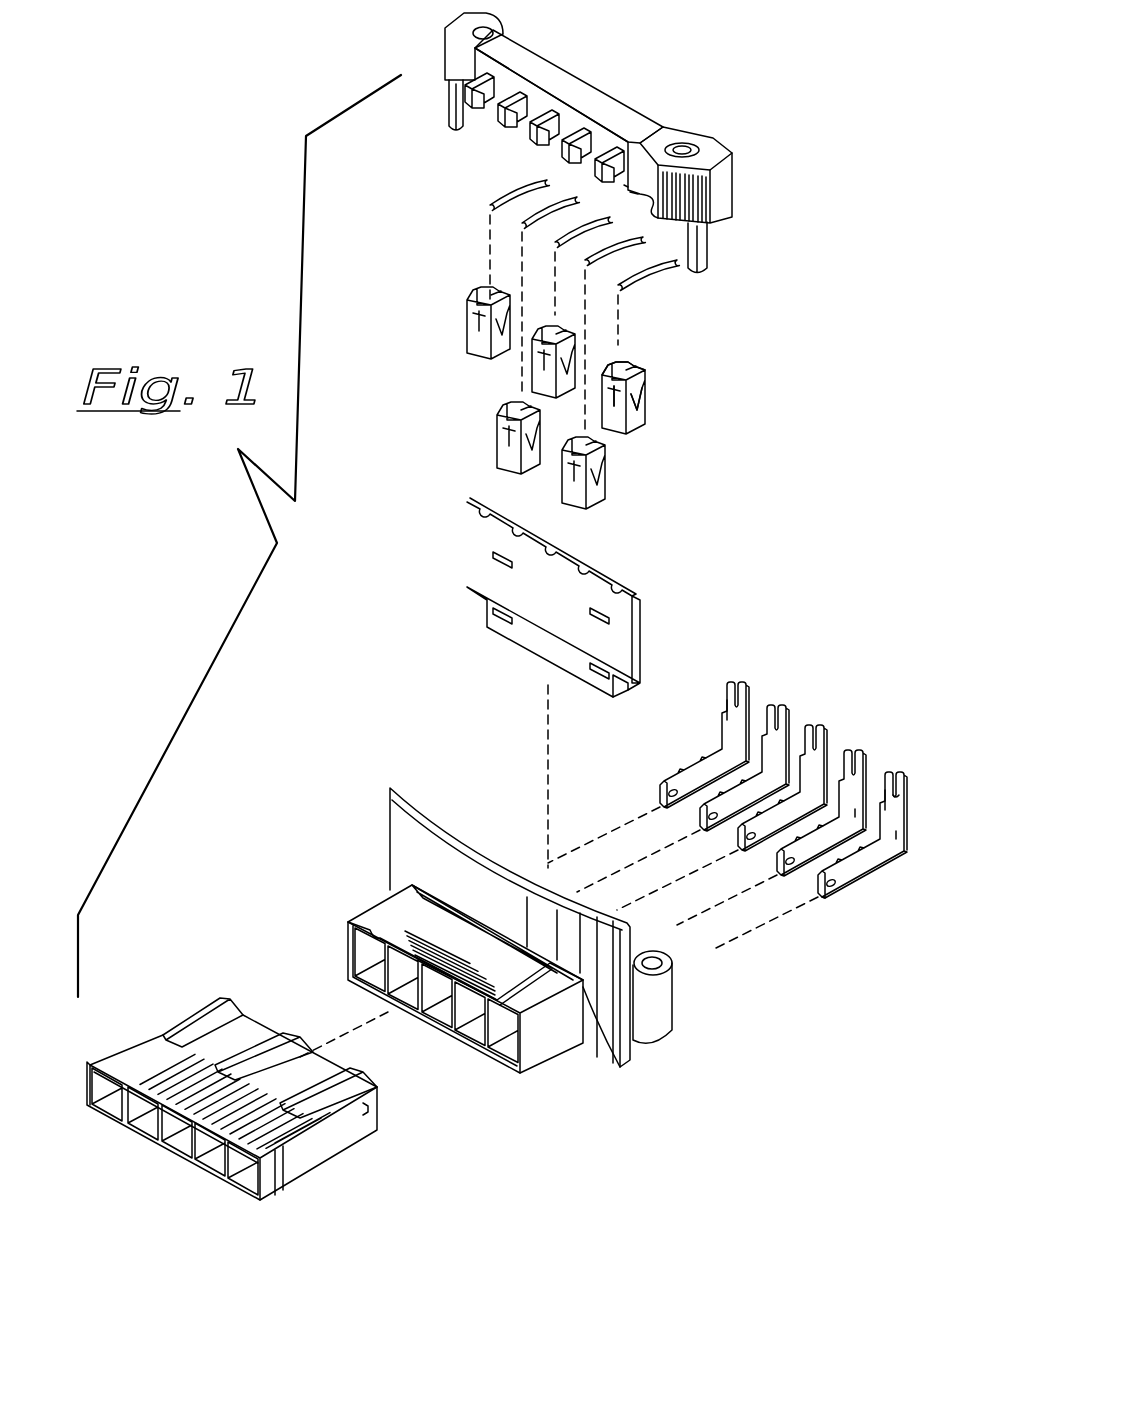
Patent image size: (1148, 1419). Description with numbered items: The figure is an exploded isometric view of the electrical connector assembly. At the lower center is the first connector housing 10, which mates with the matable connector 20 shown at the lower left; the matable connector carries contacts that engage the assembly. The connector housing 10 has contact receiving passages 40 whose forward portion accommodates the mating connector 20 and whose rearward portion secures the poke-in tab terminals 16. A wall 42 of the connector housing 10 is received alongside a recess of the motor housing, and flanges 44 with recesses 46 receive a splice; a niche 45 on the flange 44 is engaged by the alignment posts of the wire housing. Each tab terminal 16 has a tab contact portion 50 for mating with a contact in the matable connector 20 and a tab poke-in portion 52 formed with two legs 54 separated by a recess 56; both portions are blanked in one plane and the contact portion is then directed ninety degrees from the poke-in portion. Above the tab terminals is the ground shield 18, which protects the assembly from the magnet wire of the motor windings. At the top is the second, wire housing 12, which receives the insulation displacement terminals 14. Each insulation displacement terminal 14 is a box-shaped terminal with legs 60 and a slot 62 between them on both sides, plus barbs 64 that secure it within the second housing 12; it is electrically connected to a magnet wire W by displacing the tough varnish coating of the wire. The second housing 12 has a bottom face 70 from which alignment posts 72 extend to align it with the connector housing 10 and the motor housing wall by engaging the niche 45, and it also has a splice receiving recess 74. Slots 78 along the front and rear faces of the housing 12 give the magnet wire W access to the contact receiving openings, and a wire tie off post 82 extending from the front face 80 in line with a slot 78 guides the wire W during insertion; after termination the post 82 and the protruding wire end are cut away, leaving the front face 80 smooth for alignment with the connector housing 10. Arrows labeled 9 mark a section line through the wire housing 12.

The connector housing 10 is at (515, 959).
The wire housing 12 is at (604, 136).
The insulation displacement terminal 14 is at (562, 398).
The tab terminal 16 is at (803, 789).
The ground shield 18 is at (460, 560).
The matable connector 20 is at (346, 1149).
The contact receiving passages 40 is at (367, 948).
The wall 42 is at (505, 900).
The flanges 44 is at (655, 1030).
The niche 45 is at (660, 1002).
The recesses 46 is at (654, 960).
The tab contact portion 50 is at (847, 883).
The tab poke-in portion 52 is at (733, 718).
The legs 54 is at (853, 753).
The recess 56 is at (897, 783).
The legs 60 is at (603, 377).
The slot 62 is at (614, 392).
The barbs 64 is at (645, 398).
The bottom face 70 is at (655, 218).
The alignment posts 72 is at (456, 105).
The splice receiving recess 74 is at (678, 148).
The slots 78 is at (572, 112).
The front face 80 is at (456, 60).
The wire tie off post 82 is at (507, 100).
The section line 9- 9 is at (660, 148).
The magnet wire W is at (513, 196).